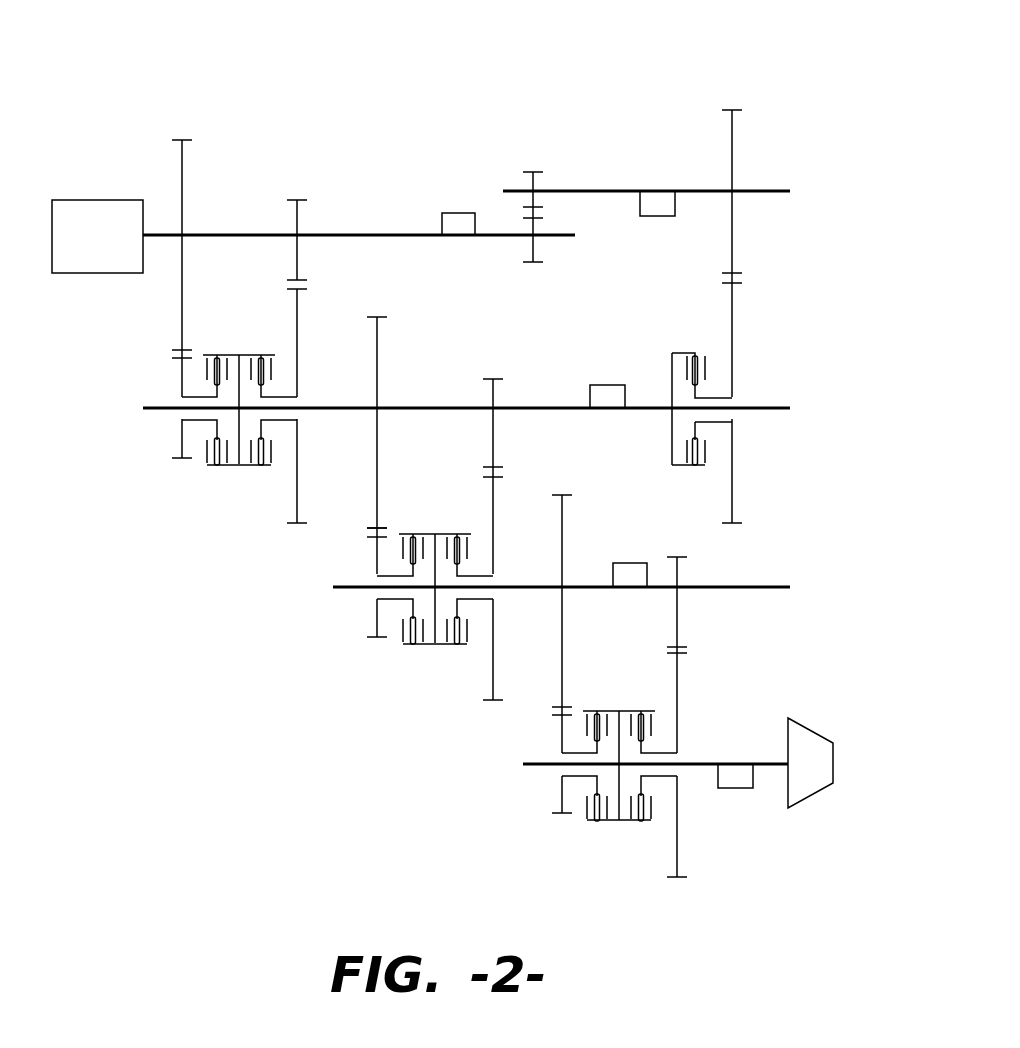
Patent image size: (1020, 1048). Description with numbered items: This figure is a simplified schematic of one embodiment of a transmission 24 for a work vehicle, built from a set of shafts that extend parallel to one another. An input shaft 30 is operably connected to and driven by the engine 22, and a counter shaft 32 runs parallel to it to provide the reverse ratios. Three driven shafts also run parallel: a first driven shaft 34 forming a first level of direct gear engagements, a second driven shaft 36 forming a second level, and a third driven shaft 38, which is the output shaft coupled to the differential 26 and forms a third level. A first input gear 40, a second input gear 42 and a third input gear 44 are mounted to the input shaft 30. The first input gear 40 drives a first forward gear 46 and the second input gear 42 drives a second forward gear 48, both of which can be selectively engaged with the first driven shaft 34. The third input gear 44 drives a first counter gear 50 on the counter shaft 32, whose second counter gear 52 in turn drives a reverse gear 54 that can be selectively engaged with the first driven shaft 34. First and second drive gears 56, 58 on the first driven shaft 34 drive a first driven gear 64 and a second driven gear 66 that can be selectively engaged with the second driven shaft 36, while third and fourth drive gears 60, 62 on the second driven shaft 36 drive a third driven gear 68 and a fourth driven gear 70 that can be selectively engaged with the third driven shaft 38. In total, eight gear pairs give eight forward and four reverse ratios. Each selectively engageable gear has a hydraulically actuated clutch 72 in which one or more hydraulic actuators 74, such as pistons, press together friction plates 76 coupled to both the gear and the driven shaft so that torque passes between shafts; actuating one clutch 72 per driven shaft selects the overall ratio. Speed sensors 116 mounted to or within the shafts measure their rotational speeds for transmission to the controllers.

The engine 22 is at (110, 251).
The transmission 24 is at (255, 73).
The differential 26 is at (818, 797).
The input shaft 30 is at (370, 232).
The counter shaft 32 is at (608, 190).
The first driven shaft 34 is at (152, 412).
The second driven shaft 36 is at (345, 590).
The third driven shaft 38 is at (532, 770).
The first input gear 40 is at (183, 168).
The second input gear 42 is at (298, 216).
The third input gear 44 is at (527, 250).
The first forward gear 46 is at (180, 372).
The second forward gear 48 is at (300, 355).
The first counter gear 50 is at (535, 181).
The second counter gear 52 is at (735, 133).
The reverse gear 54 is at (735, 357).
The first drive gear 56 is at (378, 361).
The second drive gear 58 is at (495, 395).
The third drive gear 60 is at (565, 508).
The fourth drive gear 62 is at (680, 570).
The first driven gear 64 is at (372, 557).
The second driven gear 66 is at (495, 538).
The third driven gear 68 is at (560, 735).
The fourth driven gear 70 is at (680, 710).
The hydraulically actuated clutch 72 is at (252, 305).
The hydraulic actuator 74 is at (632, 858).
The friction plates 76 is at (222, 357).
The speed sensor 116 is at (447, 213).